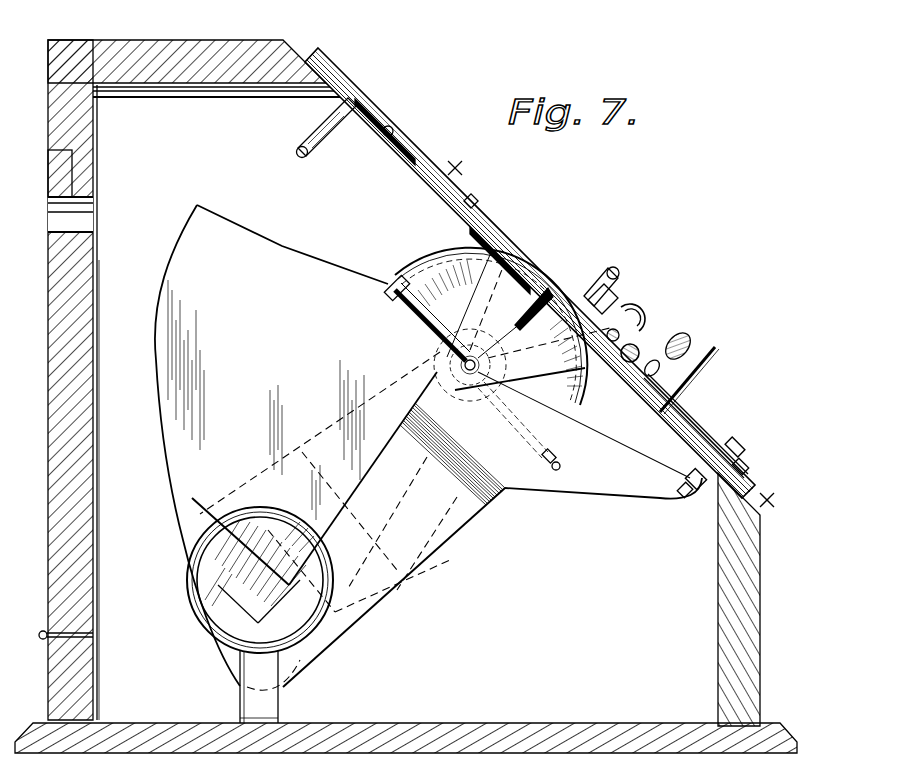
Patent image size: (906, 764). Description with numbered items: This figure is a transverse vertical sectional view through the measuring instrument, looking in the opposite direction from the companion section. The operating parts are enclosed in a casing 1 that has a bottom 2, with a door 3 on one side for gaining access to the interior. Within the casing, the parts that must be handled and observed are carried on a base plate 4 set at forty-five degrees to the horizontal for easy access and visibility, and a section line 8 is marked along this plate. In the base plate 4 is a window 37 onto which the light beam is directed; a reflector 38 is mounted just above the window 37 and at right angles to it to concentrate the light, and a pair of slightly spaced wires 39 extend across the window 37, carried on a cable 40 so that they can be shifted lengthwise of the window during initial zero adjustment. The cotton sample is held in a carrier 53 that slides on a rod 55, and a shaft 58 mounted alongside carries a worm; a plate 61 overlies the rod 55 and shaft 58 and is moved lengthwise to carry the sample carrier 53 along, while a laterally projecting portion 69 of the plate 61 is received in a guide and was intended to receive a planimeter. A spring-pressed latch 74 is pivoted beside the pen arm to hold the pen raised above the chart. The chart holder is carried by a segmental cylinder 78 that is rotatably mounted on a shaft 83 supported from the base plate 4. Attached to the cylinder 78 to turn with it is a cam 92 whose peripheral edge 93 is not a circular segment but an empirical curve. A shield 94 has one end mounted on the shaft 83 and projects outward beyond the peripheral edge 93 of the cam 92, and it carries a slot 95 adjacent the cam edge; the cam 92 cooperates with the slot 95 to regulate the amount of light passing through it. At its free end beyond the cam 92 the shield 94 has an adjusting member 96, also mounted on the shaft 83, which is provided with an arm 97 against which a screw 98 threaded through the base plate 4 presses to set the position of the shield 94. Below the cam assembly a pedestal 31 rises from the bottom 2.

The casing 1 is at (200, 52).
The bottom 2 is at (485, 722).
The door 3 is at (48, 327).
The base plate 4 is at (338, 92).
The section line 8- 8 is at (611, 335).
The pedestal 31 is at (210, 626).
The window 37 is at (398, 128).
The reflector 38 is at (322, 142).
The wires 39 is at (380, 120).
The cable 40 is at (335, 118).
The carrier 53 is at (533, 258).
The rod 55 is at (616, 329).
The shaft 58 is at (658, 352).
The plate 61 is at (640, 313).
The laterally projecting portion 69 is at (690, 424).
The spring-pressed latch 74 is at (606, 268).
The segmental cylinder 78 is at (430, 266).
The shaft 83 is at (452, 358).
The cam 92 is at (295, 246).
The peripheral edge 93 is at (165, 268).
The shield 94 is at (190, 542).
The slot 95 is at (255, 567).
The adjusting member 96 is at (433, 538).
The arm 97 is at (652, 494).
The screw 98 is at (735, 445).